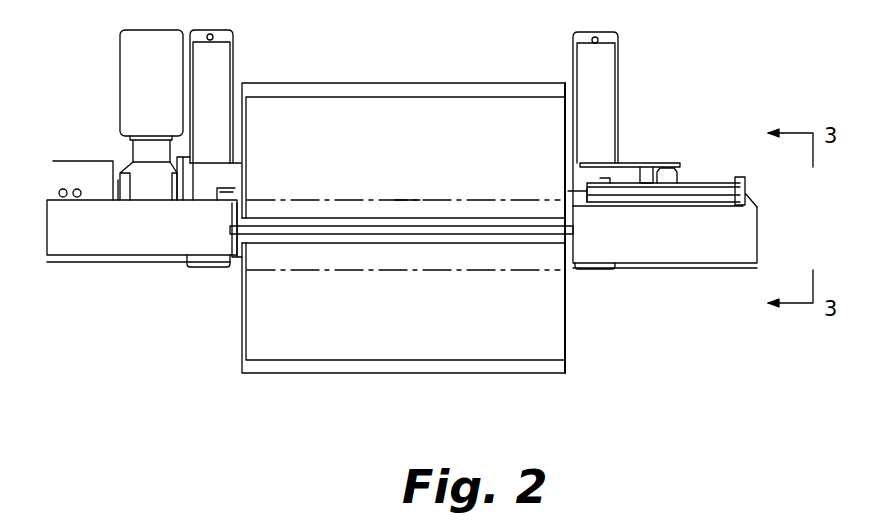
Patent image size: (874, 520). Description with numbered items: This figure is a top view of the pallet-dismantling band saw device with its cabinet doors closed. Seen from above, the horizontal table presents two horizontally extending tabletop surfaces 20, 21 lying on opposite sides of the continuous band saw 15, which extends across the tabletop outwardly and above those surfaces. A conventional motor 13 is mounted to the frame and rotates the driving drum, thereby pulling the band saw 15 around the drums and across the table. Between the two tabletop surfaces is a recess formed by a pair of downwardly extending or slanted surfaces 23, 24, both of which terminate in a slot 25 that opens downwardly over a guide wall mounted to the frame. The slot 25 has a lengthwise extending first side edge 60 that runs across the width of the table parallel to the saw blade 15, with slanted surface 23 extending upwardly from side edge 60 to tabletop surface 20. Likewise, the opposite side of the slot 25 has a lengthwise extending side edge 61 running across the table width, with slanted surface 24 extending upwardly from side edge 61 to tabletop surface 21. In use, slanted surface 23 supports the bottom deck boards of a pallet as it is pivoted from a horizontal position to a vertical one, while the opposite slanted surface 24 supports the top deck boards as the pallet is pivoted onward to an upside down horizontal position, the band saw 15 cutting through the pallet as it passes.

The motor 13 is at (137, 78).
The continuous band saw 15 is at (440, 230).
The horizontally extending surface 20 is at (291, 115).
The horizontally extending surface 21 is at (260, 337).
The slanted surface 23 is at (310, 210).
The slanted surface 24 is at (297, 258).
The slot 25 is at (403, 200).
The first side edge 60 is at (372, 220).
The side edge 61 is at (362, 240).